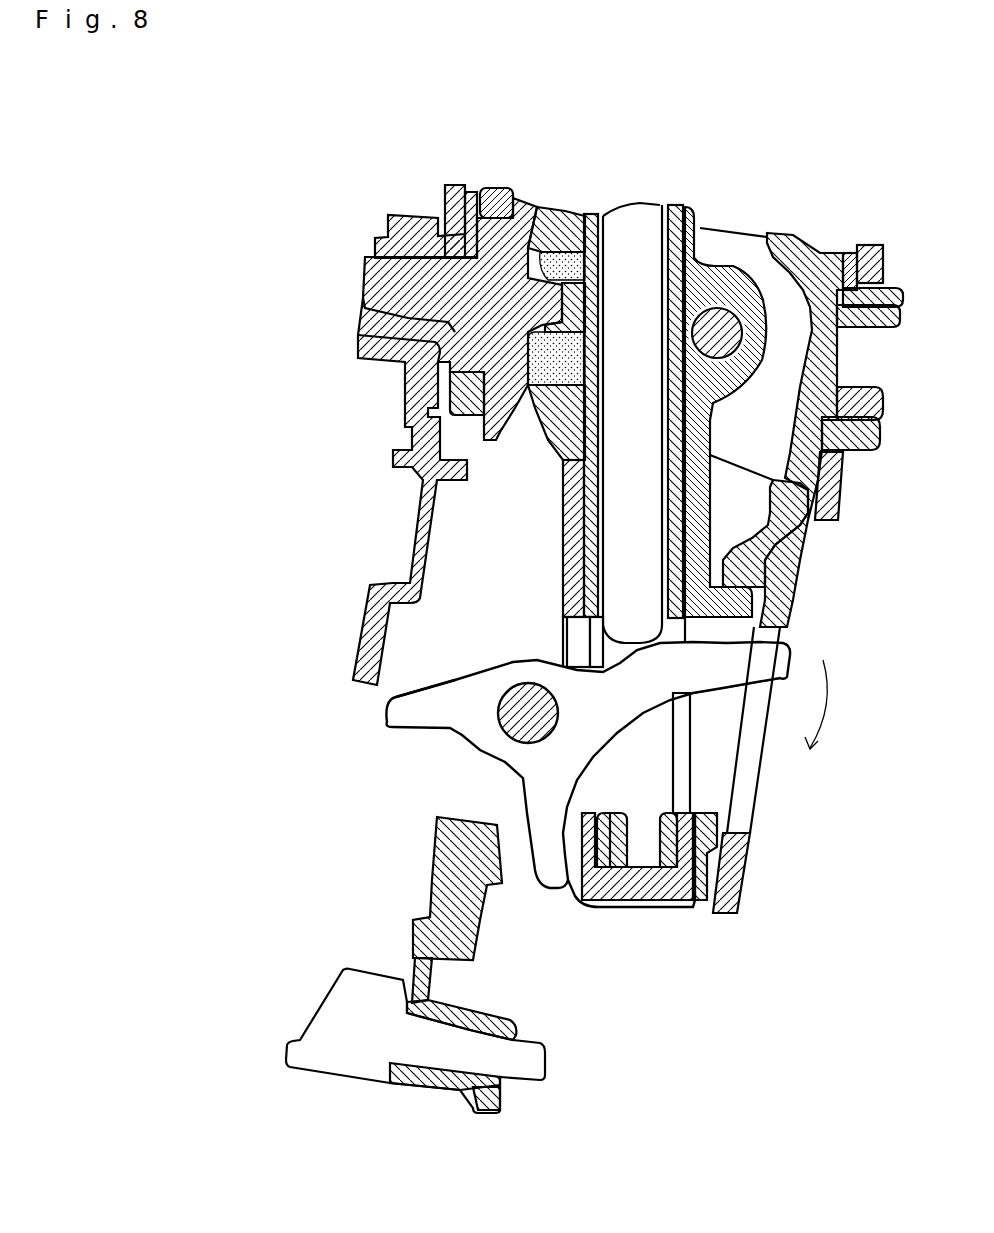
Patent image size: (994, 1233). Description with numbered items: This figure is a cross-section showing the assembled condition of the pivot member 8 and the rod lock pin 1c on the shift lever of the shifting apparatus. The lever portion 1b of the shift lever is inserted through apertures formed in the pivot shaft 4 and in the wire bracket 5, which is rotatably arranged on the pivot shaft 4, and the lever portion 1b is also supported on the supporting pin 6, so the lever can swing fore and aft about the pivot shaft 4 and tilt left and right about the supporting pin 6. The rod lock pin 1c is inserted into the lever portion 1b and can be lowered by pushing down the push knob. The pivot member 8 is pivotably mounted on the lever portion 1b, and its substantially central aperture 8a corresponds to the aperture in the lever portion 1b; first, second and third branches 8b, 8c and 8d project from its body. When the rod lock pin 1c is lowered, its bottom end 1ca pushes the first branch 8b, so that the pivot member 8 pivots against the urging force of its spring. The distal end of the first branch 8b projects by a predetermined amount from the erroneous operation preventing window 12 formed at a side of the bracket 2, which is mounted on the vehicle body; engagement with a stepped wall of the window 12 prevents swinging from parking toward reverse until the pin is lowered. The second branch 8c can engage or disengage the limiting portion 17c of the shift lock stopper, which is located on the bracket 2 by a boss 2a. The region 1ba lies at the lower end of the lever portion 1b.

The bracket 2 is at (378, 421).
The boss 2a is at (538, 1063).
The pivot shaft 4 is at (790, 236).
The wire bracket 5 is at (510, 187).
The supporting pin 6 is at (716, 308).
The lever portion 1b is at (562, 481).
The bushing end face 1ba is at (567, 630).
The rod lock pin 1c is at (647, 447).
The bottom end of the rod lock pin 1ca is at (567, 663).
The pivot member 8 is at (483, 670).
The central aperture 8a is at (500, 718).
The first branch 8b is at (740, 653).
The second branch 8c is at (563, 900).
The third branch 8d is at (408, 713).
The erroneous operation preventing window 12 is at (780, 648).
The limiting portion 17c is at (493, 890).